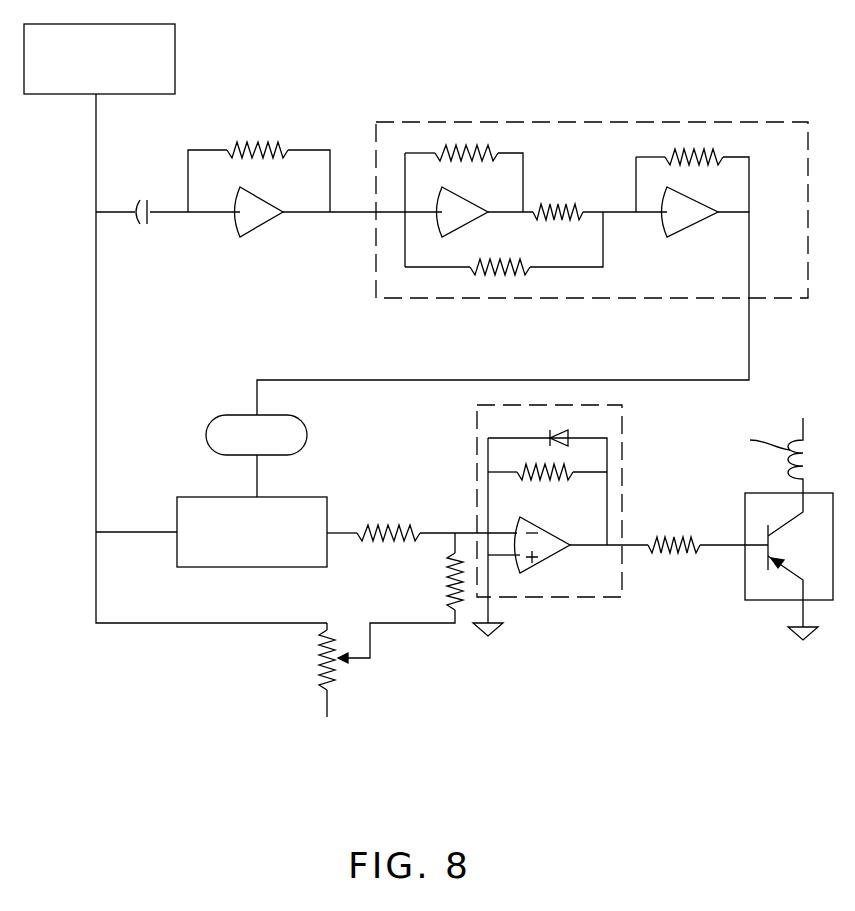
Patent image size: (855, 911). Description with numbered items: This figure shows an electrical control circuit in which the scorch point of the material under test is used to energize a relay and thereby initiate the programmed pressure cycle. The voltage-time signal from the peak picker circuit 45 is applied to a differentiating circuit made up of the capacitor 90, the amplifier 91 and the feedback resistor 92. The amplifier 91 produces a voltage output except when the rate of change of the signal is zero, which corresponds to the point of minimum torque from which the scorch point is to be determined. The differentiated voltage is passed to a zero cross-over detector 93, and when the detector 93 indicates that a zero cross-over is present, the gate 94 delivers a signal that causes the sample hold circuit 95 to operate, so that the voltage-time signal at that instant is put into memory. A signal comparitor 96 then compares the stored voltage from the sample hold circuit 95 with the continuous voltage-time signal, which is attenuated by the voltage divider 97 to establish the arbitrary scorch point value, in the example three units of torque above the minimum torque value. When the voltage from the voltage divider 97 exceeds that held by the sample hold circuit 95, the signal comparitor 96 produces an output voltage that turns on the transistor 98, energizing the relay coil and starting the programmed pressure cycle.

The peak picker circuit 45 is at (175, 47).
The capacitor 90 is at (150, 214).
The amplifier 91 is at (255, 227).
The resistor 92 is at (241, 145).
The zero cross-over detector 93 is at (634, 122).
The gate 94 is at (307, 428).
The sample hold circuit 95 is at (212, 495).
The signal comparitor 96 is at (548, 597).
The voltage divider 97 is at (310, 668).
The transistor 98 is at (771, 600).